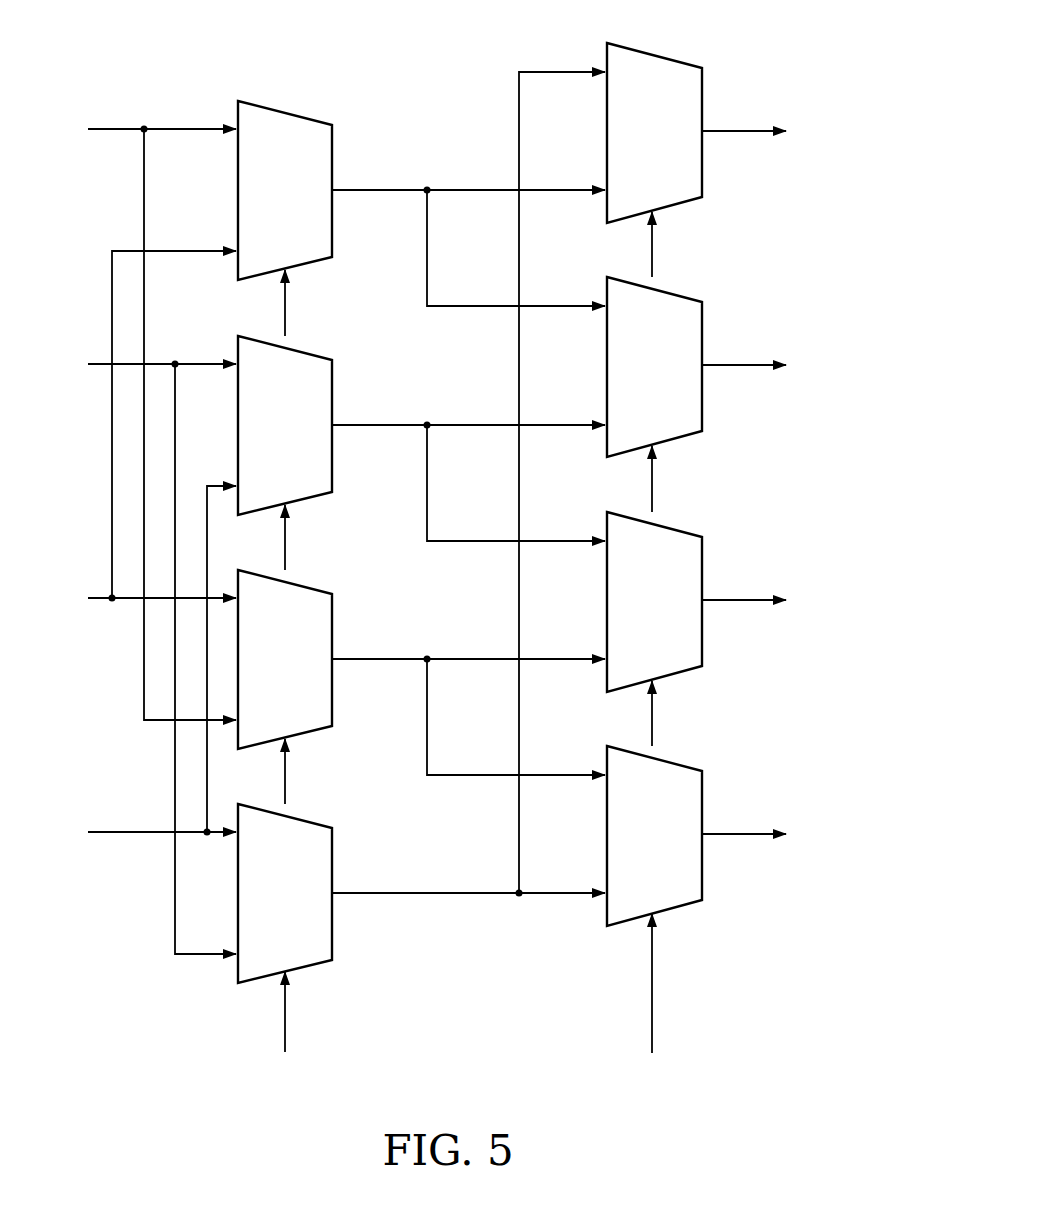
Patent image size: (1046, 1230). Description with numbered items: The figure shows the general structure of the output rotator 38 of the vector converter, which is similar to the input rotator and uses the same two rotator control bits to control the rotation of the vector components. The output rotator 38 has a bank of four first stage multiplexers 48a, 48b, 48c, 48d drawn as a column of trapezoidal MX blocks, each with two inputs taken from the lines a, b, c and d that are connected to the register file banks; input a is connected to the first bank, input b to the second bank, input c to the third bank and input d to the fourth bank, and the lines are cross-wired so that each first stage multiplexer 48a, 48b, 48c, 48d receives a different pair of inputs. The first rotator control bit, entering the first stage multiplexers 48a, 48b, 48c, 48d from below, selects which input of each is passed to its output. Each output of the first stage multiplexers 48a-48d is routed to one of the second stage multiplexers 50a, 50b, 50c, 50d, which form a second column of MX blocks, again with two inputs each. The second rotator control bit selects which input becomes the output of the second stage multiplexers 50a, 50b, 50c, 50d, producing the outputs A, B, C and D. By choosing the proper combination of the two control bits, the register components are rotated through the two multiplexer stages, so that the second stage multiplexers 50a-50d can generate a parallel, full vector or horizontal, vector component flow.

The output rotator 38 is at (761, 1012).
The first stage multiplexer 48a is at (331, 827).
The first stage multiplexer 48b is at (331, 593).
The first stage multiplexer 48c is at (331, 359).
The first stage multiplexer 48d is at (331, 124).
The second stage multiplexer 50a is at (701, 67).
The second stage multiplexer 50b is at (701, 301).
The second stage multiplexer 50c is at (701, 536).
The second stage multiplexer 50d is at (701, 770).